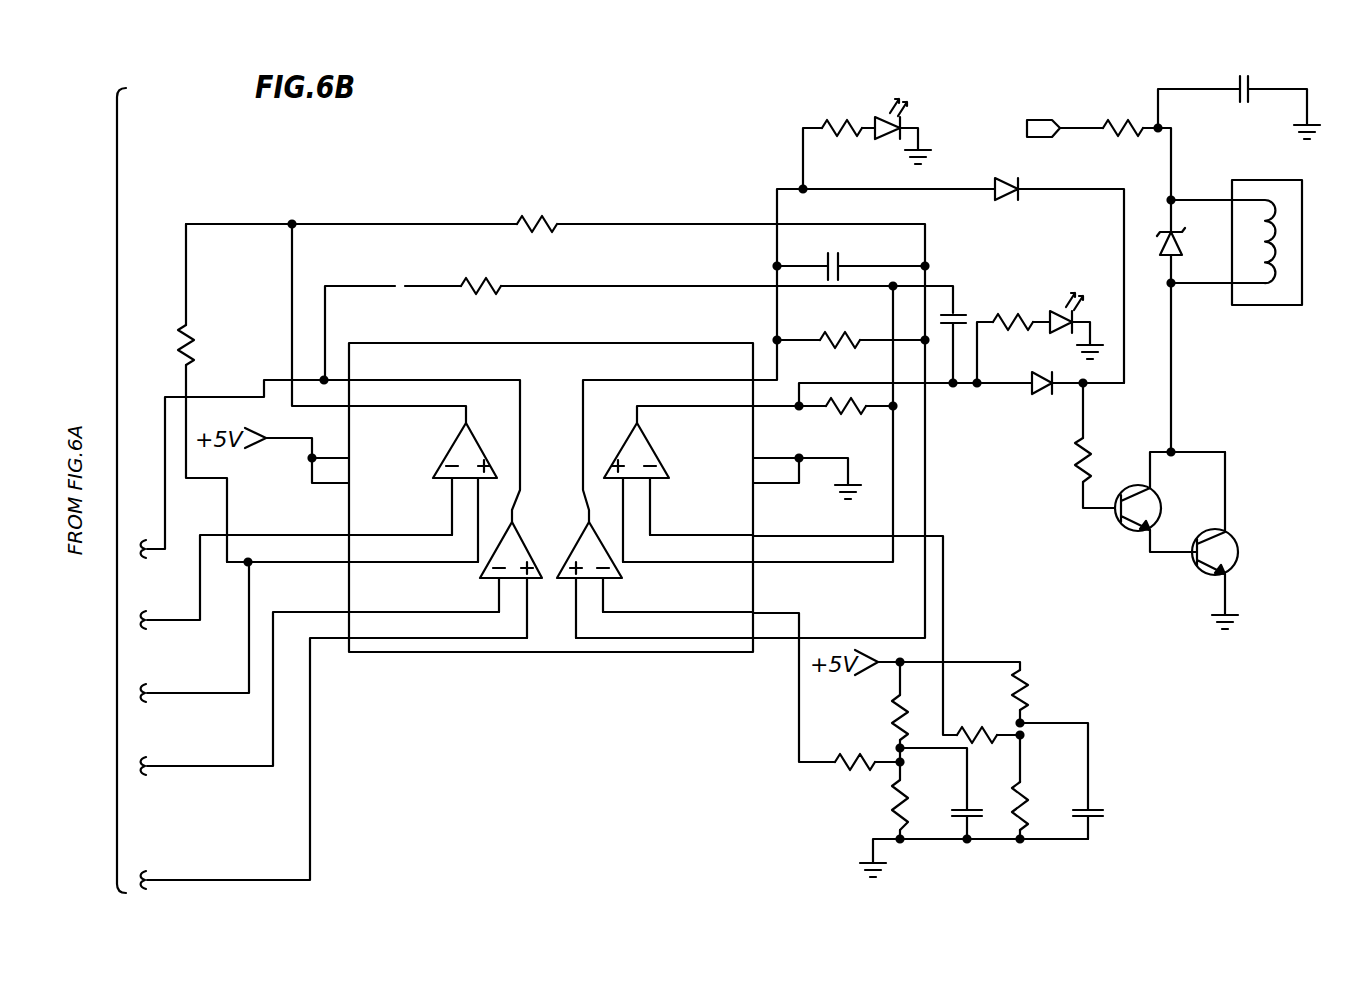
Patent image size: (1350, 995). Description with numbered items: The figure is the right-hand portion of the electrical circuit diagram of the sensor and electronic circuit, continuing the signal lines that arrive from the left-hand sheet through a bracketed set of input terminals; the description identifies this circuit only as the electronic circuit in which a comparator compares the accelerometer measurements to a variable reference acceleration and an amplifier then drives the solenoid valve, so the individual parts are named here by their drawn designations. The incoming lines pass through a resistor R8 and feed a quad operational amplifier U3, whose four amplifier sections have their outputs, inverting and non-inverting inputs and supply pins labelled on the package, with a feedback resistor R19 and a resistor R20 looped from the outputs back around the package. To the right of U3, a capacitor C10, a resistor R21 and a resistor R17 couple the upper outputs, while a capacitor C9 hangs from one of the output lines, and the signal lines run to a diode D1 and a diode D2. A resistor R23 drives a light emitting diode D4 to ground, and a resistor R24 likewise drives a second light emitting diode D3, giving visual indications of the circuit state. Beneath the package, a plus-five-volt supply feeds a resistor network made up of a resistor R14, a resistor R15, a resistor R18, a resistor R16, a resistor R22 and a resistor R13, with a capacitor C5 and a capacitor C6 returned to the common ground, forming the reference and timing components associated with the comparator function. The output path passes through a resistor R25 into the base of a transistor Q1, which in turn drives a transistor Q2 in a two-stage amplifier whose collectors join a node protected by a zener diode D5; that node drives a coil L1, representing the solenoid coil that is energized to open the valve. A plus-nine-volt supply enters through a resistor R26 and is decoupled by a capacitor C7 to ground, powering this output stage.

The resistor R8 is at (186, 345).
The resistor R19 is at (535, 224).
The resistor R20 is at (498, 286).
The quad operational amplifier U3 is at (530, 343).
The diode D1 is at (1015, 196).
The resistor R23 is at (830, 128).
The light emitting diode D4 is at (885, 138).
The capacitor C10 is at (838, 266).
The resistor R21 is at (840, 340).
The resistor R17 is at (840, 415).
The capacitor C9 is at (953, 315).
The diode D2 is at (1040, 392).
The resistor R24 is at (1010, 322).
The light emitting diode D3 is at (1062, 328).
The resistor R22 is at (977, 727).
The resistor R14 is at (1027, 700).
The resistor R15 is at (895, 718).
The resistor R18 is at (862, 770).
The resistor R16 is at (893, 800).
The capacitor C5 is at (960, 810).
The resistor R13 is at (1022, 800).
The capacitor C6 is at (1100, 815).
The resistor R25 is at (1080, 460).
The transistor Q1 is at (1125, 528).
The transistor Q2 is at (1240, 558).
The zener diode D5 is at (1185, 245).
The inductor coil L1 is at (1302, 255).
The resistor R26 is at (1122, 128).
The capacitor C7 is at (1250, 89).